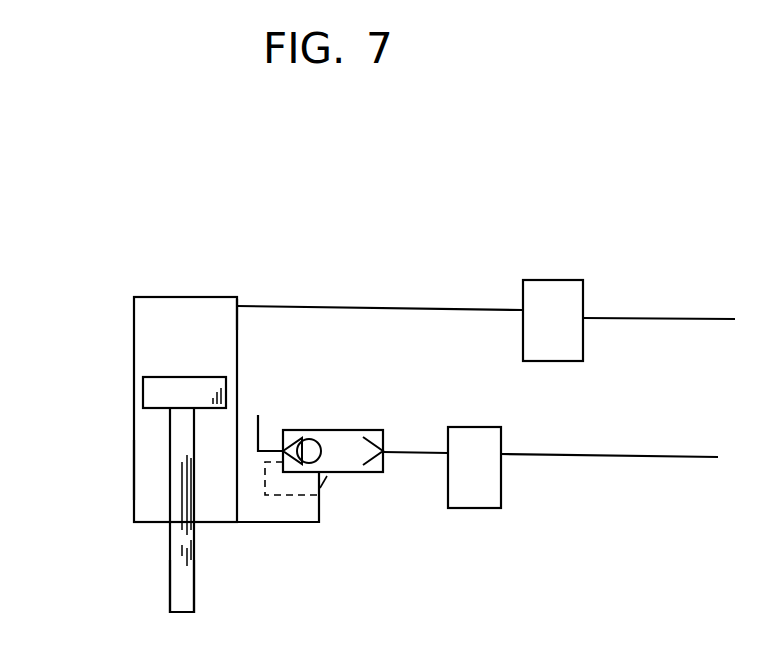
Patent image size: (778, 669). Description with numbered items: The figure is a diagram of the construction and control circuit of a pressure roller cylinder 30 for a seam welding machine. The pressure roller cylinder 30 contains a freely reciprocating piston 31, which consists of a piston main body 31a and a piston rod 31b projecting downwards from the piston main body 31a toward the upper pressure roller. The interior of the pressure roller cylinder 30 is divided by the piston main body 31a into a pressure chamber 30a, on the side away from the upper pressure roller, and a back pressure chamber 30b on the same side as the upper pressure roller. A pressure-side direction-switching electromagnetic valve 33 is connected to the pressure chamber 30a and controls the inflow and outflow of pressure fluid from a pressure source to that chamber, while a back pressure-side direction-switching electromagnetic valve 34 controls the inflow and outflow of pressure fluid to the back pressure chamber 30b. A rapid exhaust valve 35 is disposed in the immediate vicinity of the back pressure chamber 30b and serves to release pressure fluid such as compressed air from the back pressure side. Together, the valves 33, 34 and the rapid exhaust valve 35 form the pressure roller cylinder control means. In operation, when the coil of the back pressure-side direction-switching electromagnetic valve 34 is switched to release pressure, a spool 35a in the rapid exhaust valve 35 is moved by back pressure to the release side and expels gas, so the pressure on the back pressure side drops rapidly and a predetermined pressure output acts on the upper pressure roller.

The pressure roller cylinder 30 is at (122, 348).
The pressure chamber 30a is at (236, 330).
The back pressure chamber 30b is at (134, 463).
The piston 31 is at (170, 423).
The piston main body 31a is at (221, 376).
The piston rod 31b is at (169, 577).
The pressure-side direction-switching electromagnetic valve 33 is at (558, 285).
The back pressure-side direction-switching electromagnetic valve 34 is at (477, 432).
The rapid exhaust valve 35 is at (367, 472).
The spool 35a is at (315, 438).